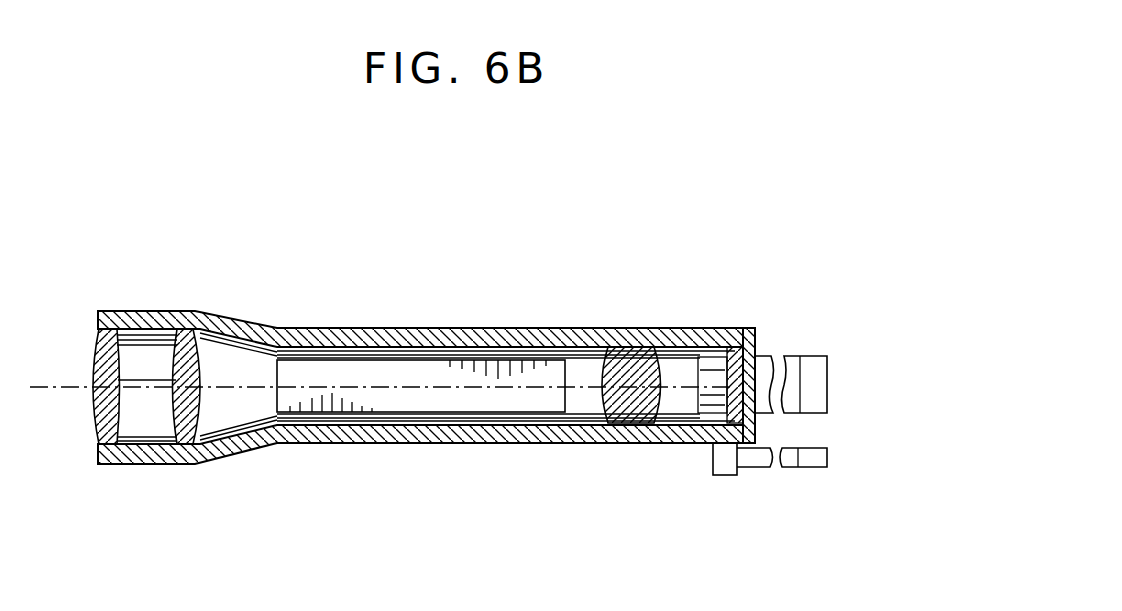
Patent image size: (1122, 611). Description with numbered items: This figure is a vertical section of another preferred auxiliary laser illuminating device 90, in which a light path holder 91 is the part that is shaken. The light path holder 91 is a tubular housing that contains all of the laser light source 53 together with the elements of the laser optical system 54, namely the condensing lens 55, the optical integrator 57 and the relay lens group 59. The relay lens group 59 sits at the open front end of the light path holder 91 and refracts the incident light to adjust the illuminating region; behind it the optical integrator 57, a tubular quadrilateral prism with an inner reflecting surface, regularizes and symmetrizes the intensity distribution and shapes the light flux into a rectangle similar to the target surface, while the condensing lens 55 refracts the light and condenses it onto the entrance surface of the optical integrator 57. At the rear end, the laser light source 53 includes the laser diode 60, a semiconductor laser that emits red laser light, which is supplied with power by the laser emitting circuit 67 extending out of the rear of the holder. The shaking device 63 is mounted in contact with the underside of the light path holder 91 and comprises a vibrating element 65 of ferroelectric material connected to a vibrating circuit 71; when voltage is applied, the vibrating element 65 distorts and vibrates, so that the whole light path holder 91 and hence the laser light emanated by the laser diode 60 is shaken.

The laser illuminating device 90 is at (456, 272).
The light path holder 91 is at (345, 336).
The laser light source 53 is at (698, 290).
The laser optical system 54 is at (660, 512).
The condensing lens 55 is at (633, 420).
The optical integrator 57 is at (450, 407).
The relay lens group 59 is at (200, 419).
The laser diode 60 is at (740, 365).
The shaking device 63 is at (703, 500).
The vibrating element 65 is at (725, 466).
The laser emitting circuit 67 is at (812, 372).
The vibrating circuit 71 is at (812, 468).